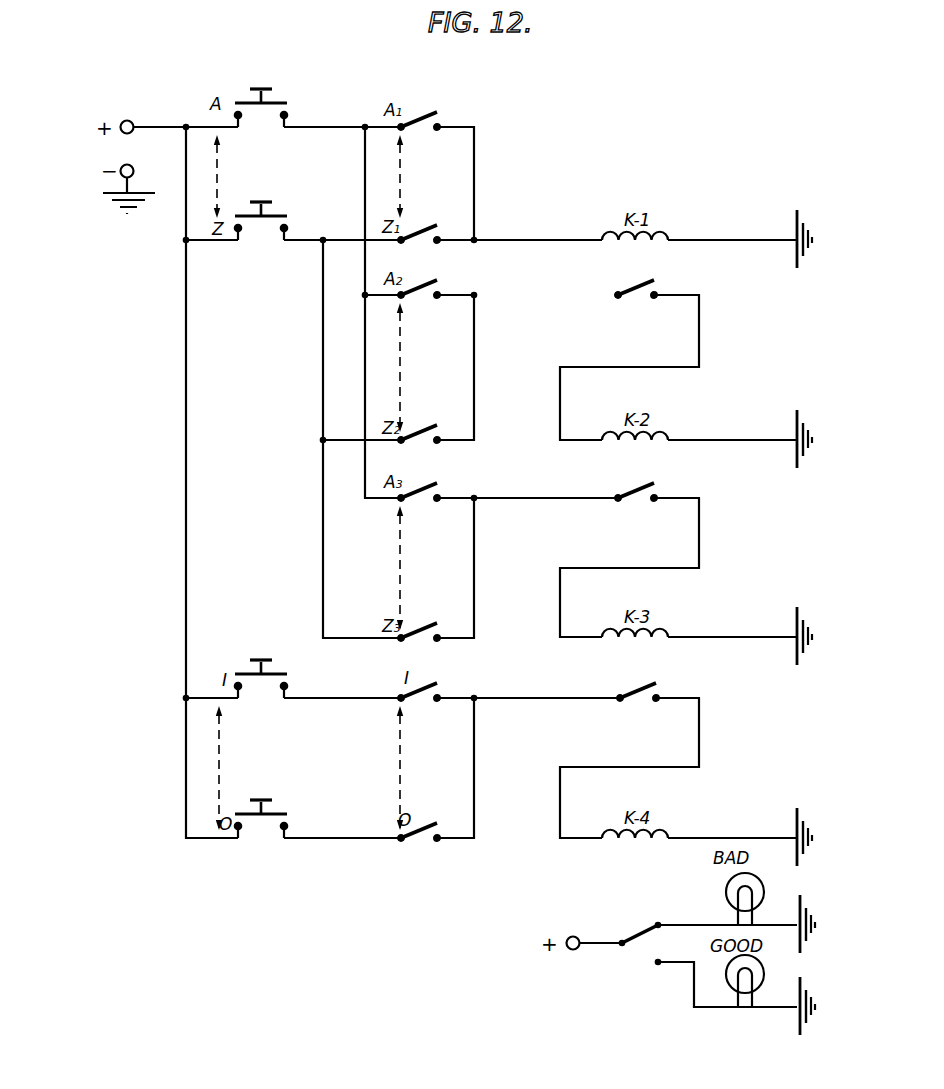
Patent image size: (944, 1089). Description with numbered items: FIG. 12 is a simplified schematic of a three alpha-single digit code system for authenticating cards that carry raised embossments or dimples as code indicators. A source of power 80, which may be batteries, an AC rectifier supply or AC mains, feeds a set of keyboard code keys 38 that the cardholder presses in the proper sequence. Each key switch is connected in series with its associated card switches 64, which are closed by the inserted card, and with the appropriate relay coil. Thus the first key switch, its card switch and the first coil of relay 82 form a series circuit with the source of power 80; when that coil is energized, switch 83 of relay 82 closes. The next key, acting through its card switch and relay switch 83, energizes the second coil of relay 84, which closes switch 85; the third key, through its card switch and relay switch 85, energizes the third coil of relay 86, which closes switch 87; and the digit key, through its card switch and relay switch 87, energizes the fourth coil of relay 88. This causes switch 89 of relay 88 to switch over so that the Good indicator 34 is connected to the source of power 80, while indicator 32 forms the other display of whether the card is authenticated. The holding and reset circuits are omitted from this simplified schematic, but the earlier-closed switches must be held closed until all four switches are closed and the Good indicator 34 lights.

The source of power 80 is at (122, 150).
The code keys 38 is at (278, 816).
The relay contacts 64 is at (438, 277).
The relay 82 is at (674, 227).
The relay switch 83 is at (617, 306).
The relay 84 is at (674, 428).
The relay switch 85 is at (617, 508).
The relay 86 is at (674, 624).
The relay switch 87 is at (618, 708).
The relay 88 is at (674, 825).
The relay switch 89 is at (622, 951).
The indicator 32 is at (766, 889).
The Good indicator 34 is at (768, 976).